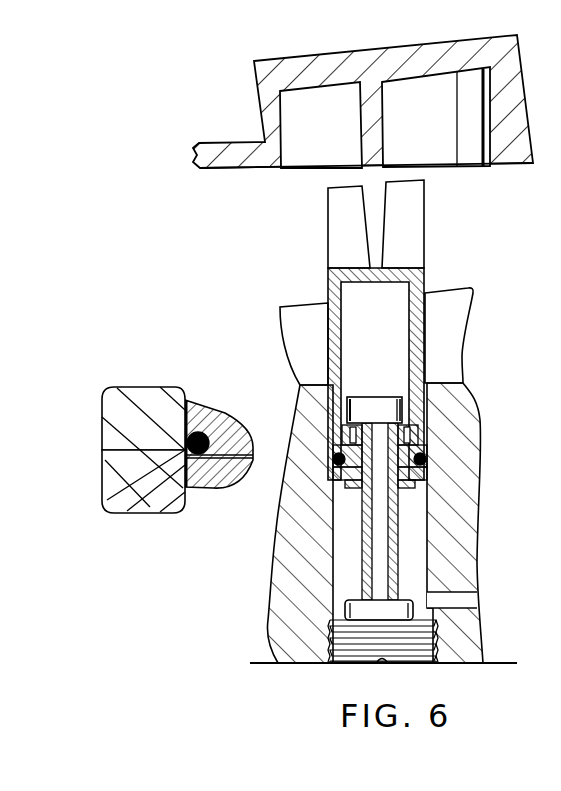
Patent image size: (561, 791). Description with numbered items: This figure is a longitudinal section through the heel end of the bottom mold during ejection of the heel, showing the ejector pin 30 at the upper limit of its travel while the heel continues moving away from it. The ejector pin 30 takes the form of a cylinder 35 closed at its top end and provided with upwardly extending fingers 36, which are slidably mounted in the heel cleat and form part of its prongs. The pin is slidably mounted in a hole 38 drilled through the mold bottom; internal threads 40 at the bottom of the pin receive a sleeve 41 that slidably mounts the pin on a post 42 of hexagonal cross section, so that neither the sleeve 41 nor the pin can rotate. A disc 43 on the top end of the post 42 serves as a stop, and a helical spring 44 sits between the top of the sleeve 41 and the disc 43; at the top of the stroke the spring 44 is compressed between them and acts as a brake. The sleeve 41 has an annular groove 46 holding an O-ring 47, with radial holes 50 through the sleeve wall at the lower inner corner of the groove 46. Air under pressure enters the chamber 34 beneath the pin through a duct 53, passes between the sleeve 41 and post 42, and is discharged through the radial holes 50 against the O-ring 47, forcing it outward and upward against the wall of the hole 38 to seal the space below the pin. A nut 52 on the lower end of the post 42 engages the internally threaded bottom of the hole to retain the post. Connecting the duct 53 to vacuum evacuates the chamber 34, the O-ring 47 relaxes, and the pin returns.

The ejector pin 30 is at (425, 330).
The chamber 34 is at (413, 555).
The cylinder 35 is at (342, 303).
The fingers 36 is at (333, 222).
The hole 38 is at (447, 498).
The internal threads 40 is at (418, 432).
The sleeve 41 is at (335, 490).
The post 42 is at (362, 563).
The disc 43 is at (382, 400).
The helical spring 44 is at (420, 440).
The annular groove 46 is at (105, 497).
The O-ring 47 is at (186, 457).
The radial holes 50 is at (253, 456).
The nut 52 is at (345, 663).
The duct 53 is at (467, 605).